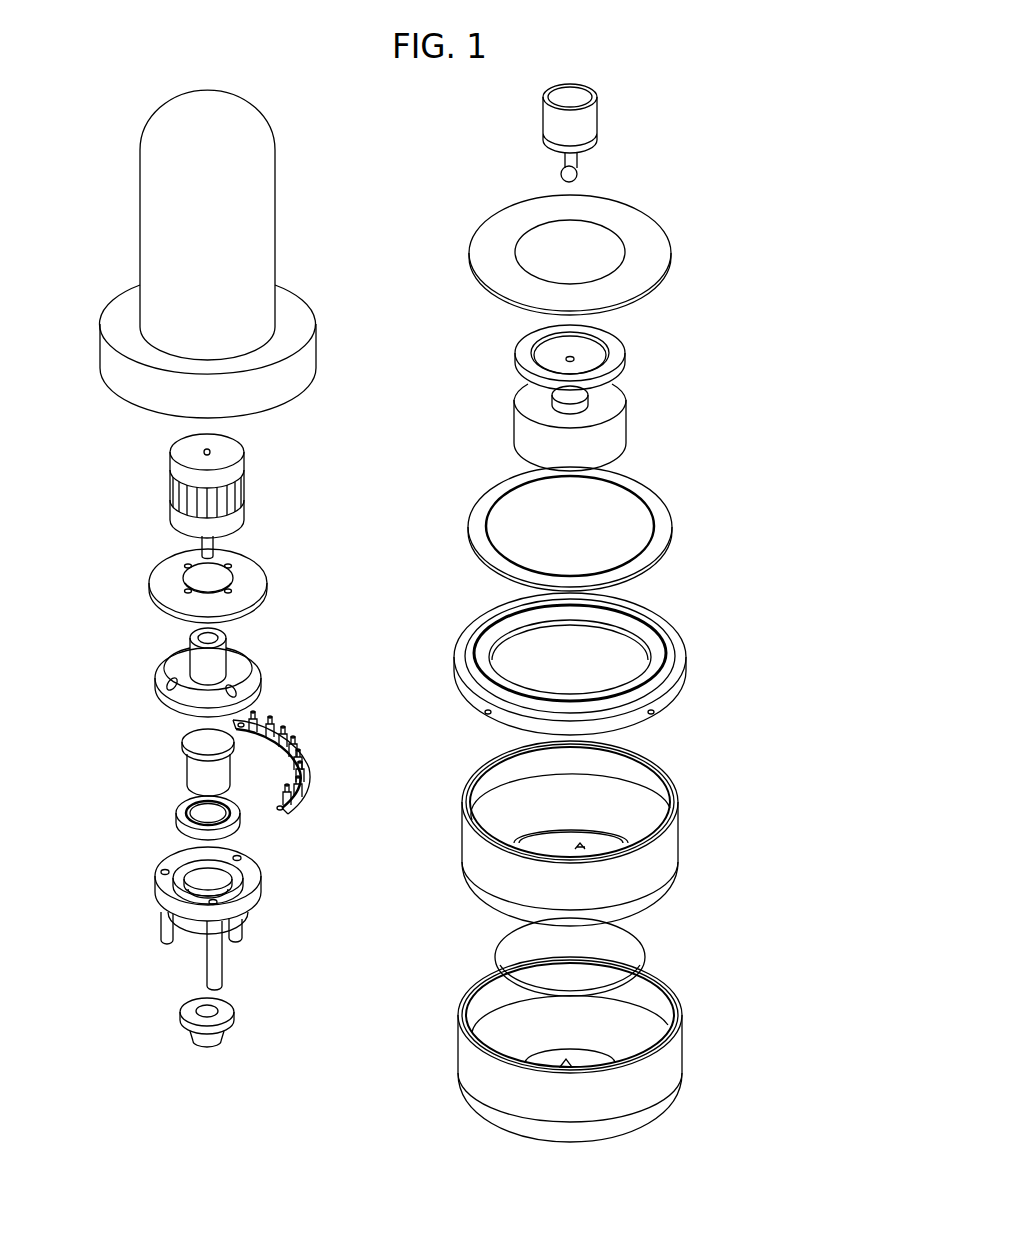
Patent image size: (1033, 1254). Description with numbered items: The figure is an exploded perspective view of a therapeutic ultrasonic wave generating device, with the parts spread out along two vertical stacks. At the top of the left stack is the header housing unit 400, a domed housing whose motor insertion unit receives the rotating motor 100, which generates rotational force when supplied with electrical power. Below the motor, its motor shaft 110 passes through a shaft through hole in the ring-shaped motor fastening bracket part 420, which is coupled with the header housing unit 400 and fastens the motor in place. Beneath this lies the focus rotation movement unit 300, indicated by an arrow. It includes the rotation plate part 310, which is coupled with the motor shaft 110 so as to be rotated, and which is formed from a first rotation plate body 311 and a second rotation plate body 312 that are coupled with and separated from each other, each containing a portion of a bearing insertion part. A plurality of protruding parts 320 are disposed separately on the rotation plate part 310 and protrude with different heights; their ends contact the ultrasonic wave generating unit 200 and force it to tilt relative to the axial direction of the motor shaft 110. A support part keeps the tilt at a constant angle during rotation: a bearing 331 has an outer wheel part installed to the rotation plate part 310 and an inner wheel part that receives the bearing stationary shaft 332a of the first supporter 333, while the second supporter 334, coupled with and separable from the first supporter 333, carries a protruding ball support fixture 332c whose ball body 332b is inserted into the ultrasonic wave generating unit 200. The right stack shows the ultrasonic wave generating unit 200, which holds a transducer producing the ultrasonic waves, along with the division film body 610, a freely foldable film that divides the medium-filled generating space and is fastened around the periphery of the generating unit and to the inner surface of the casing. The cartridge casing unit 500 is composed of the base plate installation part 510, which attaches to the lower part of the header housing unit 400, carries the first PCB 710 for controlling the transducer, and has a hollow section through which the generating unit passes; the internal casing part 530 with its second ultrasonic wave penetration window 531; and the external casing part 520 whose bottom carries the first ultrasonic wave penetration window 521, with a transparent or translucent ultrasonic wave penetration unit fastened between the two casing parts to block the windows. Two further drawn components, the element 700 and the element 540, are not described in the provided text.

The rotating motor 100 is at (240, 469).
The motor shaft 110 is at (213, 546).
The ultrasonic wave generating unit 200 is at (630, 410).
The focus rotation movement unit 300 is at (128, 680).
The rotation plate part 310 is at (386, 718).
The first rotation plate body 311 is at (262, 683).
The second rotation plate body 312 is at (262, 858).
The protruding parts 320 is at (207, 975).
The bearing 331 is at (178, 825).
The bearing stationary shaft 332a is at (205, 773).
The ball body 332b is at (580, 172).
The ball support fixture 332c is at (578, 157).
The first supporter 333 is at (232, 1012).
The second supporter 334 is at (558, 128).
The header housing unit 400 is at (258, 236).
The motor fastening bracket part 420 is at (250, 590).
The cartridge casing unit 500 is at (774, 1030).
The base plate installation part 510 is at (667, 633).
The external casing part 520 is at (574, 1049).
The first ultrasonic wave penetration window 521 is at (530, 1073).
The internal casing part 530 is at (612, 833).
The second ultrasonic wave penetration window 531 is at (586, 845).
The membrane 540 is at (628, 940).
The division film body 610 is at (647, 258).
The cap plate 700 is at (195, 717).
The first PCB 710 is at (660, 530).